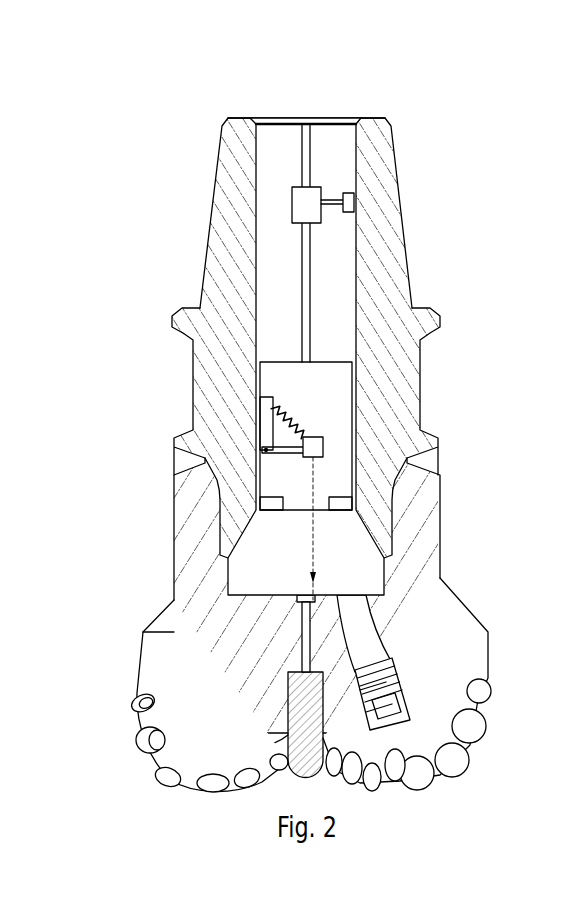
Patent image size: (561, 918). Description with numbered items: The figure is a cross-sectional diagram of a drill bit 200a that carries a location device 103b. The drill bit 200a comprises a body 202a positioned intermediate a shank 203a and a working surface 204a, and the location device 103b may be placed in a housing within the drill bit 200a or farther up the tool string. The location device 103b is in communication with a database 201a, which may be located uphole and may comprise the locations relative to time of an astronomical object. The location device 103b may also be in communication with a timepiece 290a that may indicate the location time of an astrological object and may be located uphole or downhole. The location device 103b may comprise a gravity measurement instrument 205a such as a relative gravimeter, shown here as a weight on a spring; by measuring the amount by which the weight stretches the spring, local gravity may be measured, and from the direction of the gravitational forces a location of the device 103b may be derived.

The drill bit 200a is at (313, 459).
The database 201a is at (313, 205).
The timepiece 290a is at (352, 200).
The shank 203a is at (138, 252).
The body 202a is at (138, 407).
The location device 103b is at (345, 378).
The gravity measurement instrument 205a is at (323, 440).
The working surface 204a is at (152, 575).